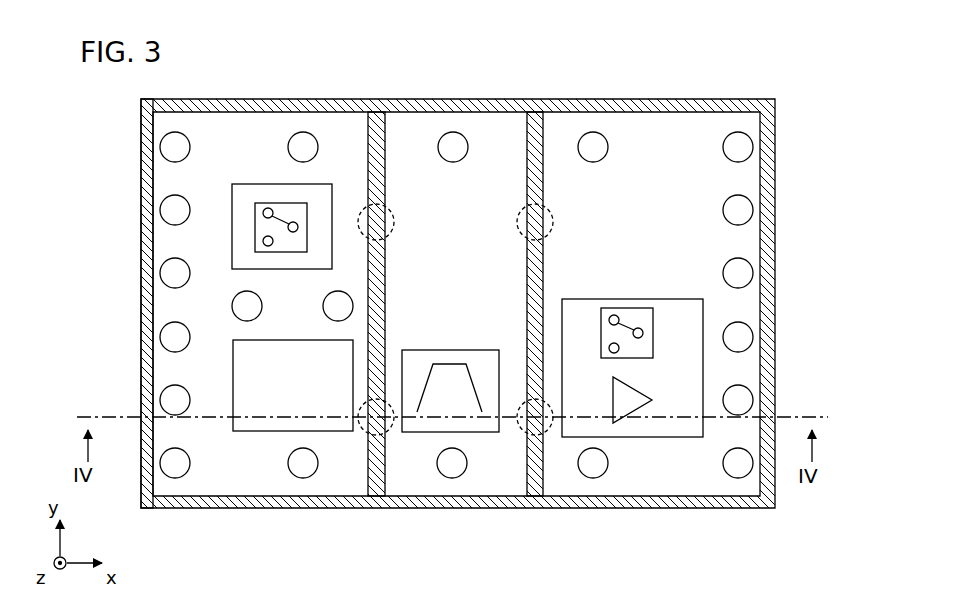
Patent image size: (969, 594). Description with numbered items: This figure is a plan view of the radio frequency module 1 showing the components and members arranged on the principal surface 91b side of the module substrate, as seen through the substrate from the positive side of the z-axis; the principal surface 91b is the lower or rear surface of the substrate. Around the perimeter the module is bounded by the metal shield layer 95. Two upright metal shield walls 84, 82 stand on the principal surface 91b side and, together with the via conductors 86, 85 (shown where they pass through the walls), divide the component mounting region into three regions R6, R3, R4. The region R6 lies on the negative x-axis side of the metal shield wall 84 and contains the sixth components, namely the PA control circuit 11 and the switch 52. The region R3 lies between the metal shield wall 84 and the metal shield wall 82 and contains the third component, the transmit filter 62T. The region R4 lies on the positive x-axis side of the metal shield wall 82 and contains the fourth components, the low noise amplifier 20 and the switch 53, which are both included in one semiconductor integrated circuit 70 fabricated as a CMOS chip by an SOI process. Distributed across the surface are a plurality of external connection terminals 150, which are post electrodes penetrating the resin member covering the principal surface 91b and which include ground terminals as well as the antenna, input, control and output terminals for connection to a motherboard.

The radio frequency module 1 is at (800, 114).
The metal shield layer 95 is at (141, 233).
The principal surface 91b is at (684, 186).
The metal shield wall 84 is at (385, 176).
The metal shield wall 82 is at (543, 190).
The external connection terminals 150 is at (740, 276).
The via conductor 86 is at (391, 426).
The via conductor 85 is at (527, 429).
The switch 52 is at (252, 184).
The PA control circuit 11 is at (256, 436).
The transmit filter 62T is at (455, 350).
The semiconductor integrated circuit 70 is at (668, 299).
The switch 53 is at (622, 308).
The low noise amplifier 20 is at (638, 412).
The region R6 is at (212, 438).
The region R3 is at (477, 433).
The region R4 is at (685, 442).